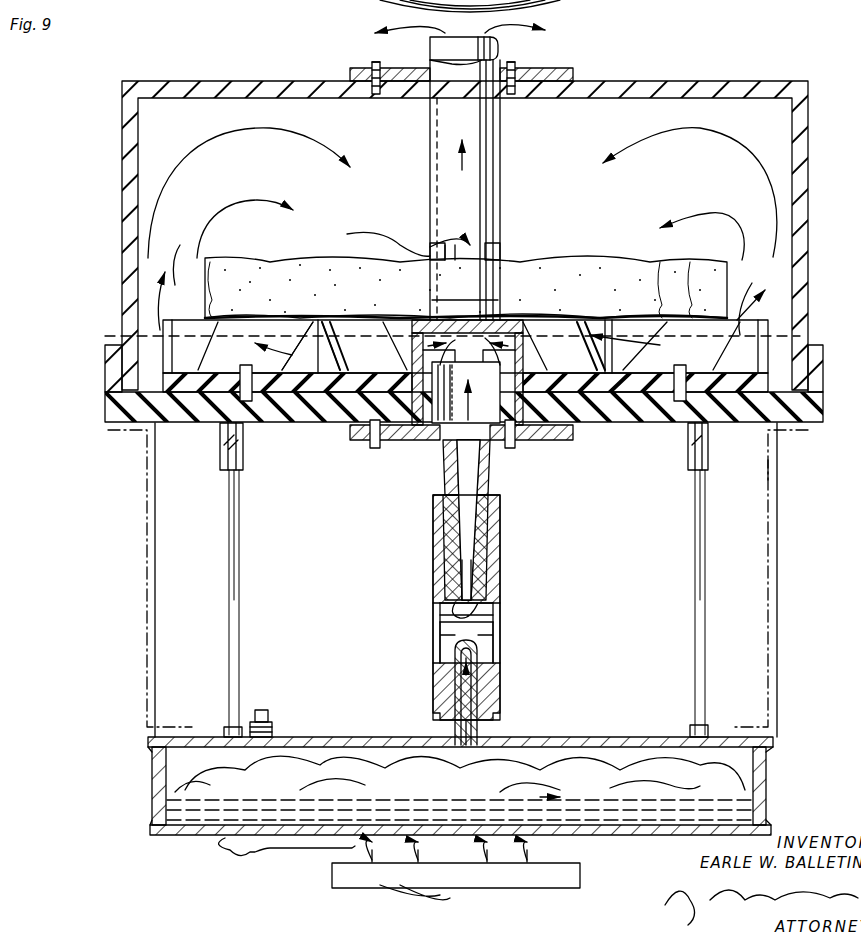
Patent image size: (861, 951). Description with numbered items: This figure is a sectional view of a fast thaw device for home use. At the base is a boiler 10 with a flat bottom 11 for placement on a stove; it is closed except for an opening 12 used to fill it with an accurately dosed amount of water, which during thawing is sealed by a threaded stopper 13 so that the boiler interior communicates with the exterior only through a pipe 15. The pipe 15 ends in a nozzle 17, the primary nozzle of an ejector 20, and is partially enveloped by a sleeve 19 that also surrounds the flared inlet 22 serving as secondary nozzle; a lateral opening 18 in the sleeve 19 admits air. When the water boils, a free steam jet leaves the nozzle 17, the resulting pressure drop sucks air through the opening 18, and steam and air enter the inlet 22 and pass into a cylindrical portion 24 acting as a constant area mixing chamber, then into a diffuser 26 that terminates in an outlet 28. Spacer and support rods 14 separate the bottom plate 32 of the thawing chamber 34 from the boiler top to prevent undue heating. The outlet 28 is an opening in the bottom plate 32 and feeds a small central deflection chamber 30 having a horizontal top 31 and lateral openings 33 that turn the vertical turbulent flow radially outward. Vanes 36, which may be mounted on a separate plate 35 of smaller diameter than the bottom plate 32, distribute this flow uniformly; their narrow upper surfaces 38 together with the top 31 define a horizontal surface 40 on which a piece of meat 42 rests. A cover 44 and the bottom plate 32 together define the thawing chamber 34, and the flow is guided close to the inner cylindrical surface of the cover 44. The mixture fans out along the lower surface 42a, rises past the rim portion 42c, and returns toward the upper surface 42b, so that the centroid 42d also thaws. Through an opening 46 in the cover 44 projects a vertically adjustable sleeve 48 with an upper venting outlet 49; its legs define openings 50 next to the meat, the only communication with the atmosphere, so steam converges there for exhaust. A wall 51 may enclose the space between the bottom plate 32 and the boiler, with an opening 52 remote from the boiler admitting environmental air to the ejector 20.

The boiler 10 is at (215, 830).
The flat bottom 11 is at (600, 840).
The opening 12 is at (280, 745).
The threaded stopper 13 is at (270, 714).
The spacer and support rods 14 is at (240, 600).
The pipe 15 is at (492, 705).
The nozzle 17 is at (455, 652).
The opening 18 is at (500, 634).
The sleeve 19 is at (500, 588).
The ejector 20 is at (520, 548).
The flared inlet 22 is at (440, 622).
The cylindrical portion 24 is at (455, 583).
The diffuser 26 is at (485, 480).
The outlet 28 is at (446, 450).
The deflection chamber 30 is at (530, 362).
The horizontal top 31 is at (380, 308).
The bottom plate 32 is at (722, 423).
The lateral openings 33 is at (300, 320).
The thawing chamber 34 is at (675, 197).
The separate plate 35 is at (800, 420).
The vanes 36 is at (502, 331).
The upper surfaces 38 is at (682, 330).
The horizontal surface 40 is at (600, 320).
The piece of meat 42 is at (466, 287).
The lower surface 42a is at (268, 332).
The upper surface 42b is at (340, 253).
The rim portion 42c is at (205, 277).
The centroid 42d is at (490, 278).
The cover 44 is at (800, 170).
The opening 46 is at (515, 95).
The sleeve 48 is at (502, 163).
The upper venting outlet 49 is at (505, 38).
The openings 50 is at (500, 225).
The wall 51 is at (778, 566).
The opening 52 is at (770, 468).